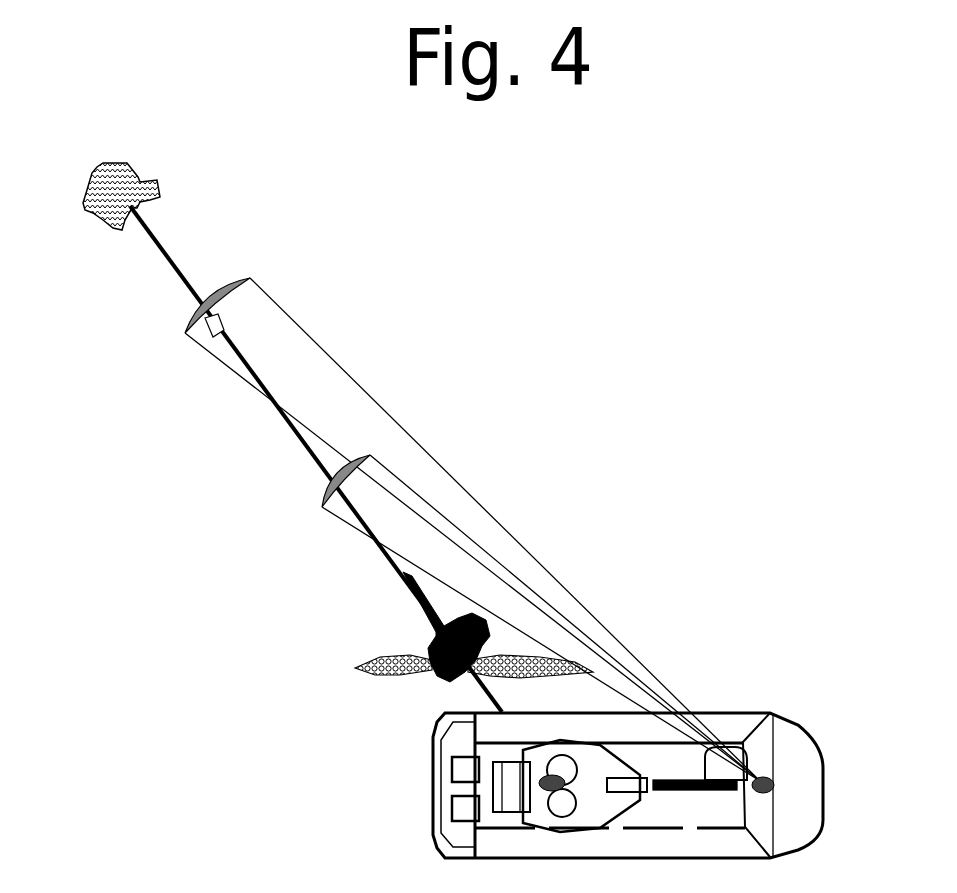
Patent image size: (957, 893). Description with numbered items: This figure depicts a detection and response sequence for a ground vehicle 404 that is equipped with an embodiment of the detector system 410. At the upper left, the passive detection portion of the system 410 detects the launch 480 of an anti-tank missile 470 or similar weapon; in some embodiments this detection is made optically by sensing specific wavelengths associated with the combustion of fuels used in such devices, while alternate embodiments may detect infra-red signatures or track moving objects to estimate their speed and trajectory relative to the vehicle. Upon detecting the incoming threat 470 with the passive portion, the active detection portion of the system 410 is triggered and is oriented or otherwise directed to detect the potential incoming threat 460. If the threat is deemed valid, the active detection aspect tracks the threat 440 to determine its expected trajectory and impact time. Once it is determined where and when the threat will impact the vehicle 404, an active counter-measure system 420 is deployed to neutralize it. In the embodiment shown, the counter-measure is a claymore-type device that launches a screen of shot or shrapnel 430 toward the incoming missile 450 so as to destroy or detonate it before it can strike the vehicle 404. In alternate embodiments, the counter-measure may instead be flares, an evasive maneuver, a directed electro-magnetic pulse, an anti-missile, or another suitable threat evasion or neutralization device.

The ground vehicle 404 is at (669, 647).
The system 410 is at (844, 675).
The active counter-measure system 420 is at (395, 797).
The screen of shot or shrapnel 430 is at (365, 693).
The tracking of the threat 440 is at (477, 450).
The incoming missile 450 is at (330, 627).
The potential incoming threat 460 is at (385, 305).
The anti-tank missile 470 is at (137, 413).
The launch 480 is at (226, 197).